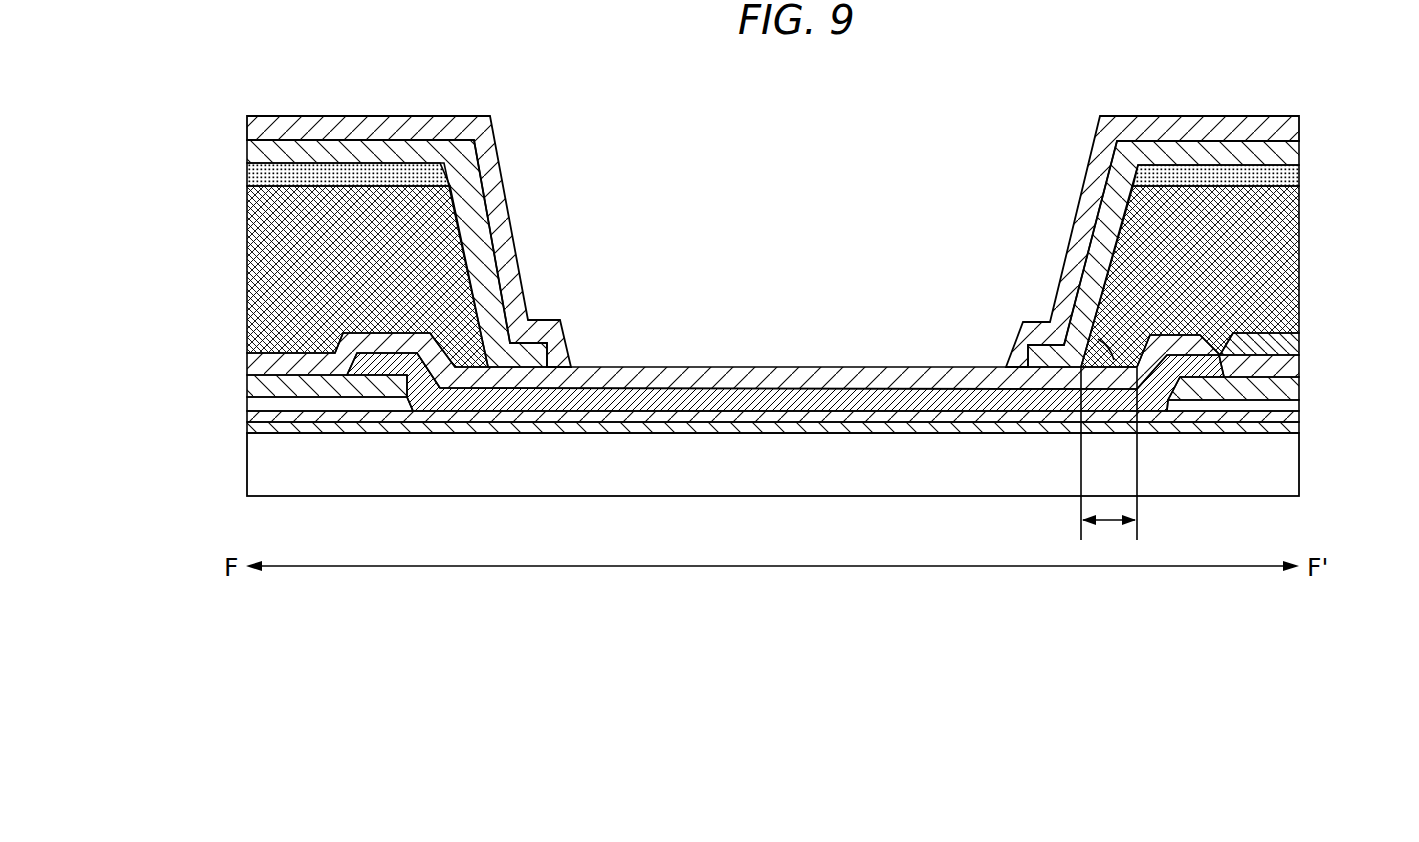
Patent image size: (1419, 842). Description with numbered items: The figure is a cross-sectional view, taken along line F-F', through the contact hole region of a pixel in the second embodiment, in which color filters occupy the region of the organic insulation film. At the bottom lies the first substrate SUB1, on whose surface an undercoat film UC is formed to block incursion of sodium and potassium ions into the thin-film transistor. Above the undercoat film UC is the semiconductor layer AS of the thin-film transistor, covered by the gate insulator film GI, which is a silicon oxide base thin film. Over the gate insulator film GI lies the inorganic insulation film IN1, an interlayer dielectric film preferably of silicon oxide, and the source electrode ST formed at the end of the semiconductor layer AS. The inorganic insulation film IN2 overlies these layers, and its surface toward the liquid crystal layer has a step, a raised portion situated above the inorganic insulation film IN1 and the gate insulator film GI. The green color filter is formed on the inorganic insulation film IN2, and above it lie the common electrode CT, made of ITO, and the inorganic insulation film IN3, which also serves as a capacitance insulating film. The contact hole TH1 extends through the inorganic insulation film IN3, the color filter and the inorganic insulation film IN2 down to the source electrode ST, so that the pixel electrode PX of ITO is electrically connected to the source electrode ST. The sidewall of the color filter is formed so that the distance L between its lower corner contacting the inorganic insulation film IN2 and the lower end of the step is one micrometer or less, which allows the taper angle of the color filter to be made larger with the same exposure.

The pixel electrode PX is at (1278, 122).
The inorganic insulation film IN3 is at (1293, 149).
The common electrode CT is at (1293, 177).
The inorganic insulation film IN2 is at (1230, 337).
The source electrode ST is at (1160, 345).
The inorganic insulation film IN1 is at (1299, 392).
The gate insulator film GI is at (1299, 402).
The semiconductor layer AS is at (1299, 415).
The undercoat film UC is at (1299, 428).
The first substrate SUB1 is at (1288, 478).
The contact hole TH1 is at (797, 267).
The distance L is at (1109, 462).